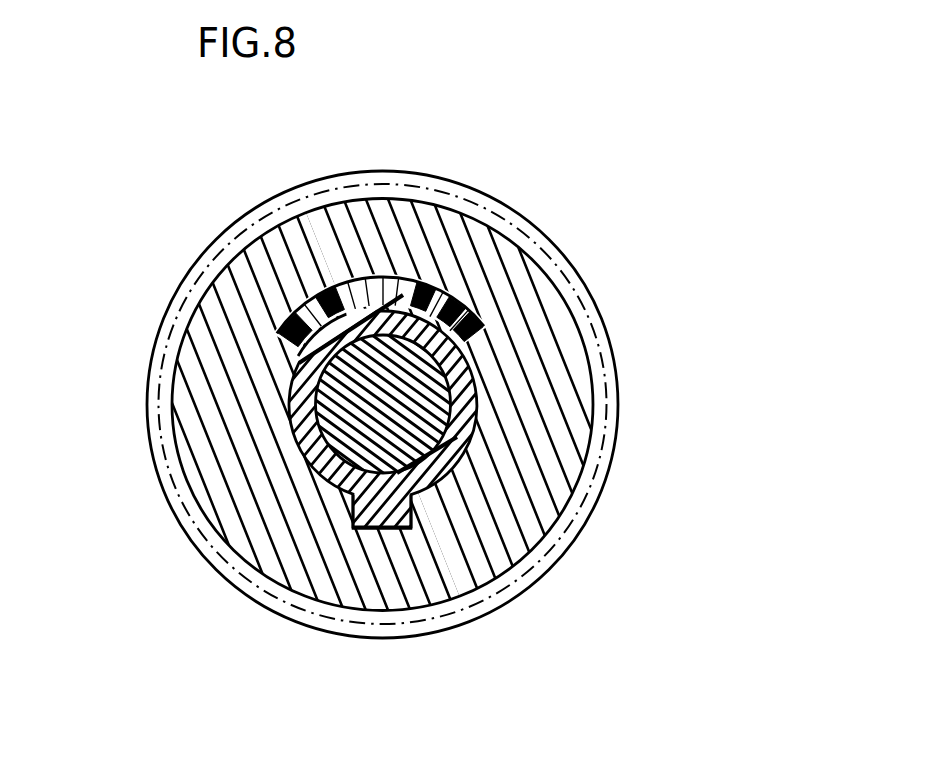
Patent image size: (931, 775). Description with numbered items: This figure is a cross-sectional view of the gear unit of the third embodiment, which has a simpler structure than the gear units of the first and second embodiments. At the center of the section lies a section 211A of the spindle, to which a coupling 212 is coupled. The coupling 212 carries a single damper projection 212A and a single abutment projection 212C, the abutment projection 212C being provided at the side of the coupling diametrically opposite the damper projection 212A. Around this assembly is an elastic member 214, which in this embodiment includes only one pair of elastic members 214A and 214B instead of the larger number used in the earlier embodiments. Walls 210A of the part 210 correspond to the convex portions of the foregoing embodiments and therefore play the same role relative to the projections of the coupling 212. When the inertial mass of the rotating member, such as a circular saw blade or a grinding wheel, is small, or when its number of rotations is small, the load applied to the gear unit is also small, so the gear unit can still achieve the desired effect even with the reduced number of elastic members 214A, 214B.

The outer tube 210 is at (522, 297).
The walls 210A is at (354, 500).
The section of the spindle 211A is at (430, 383).
The coupling 212 is at (438, 460).
The damper projection 212A is at (388, 308).
The abutment projection 212C is at (382, 507).
The elastic member 214 is at (515, 64).
The elastic member 214A is at (325, 300).
The elastic member 214B is at (448, 300).